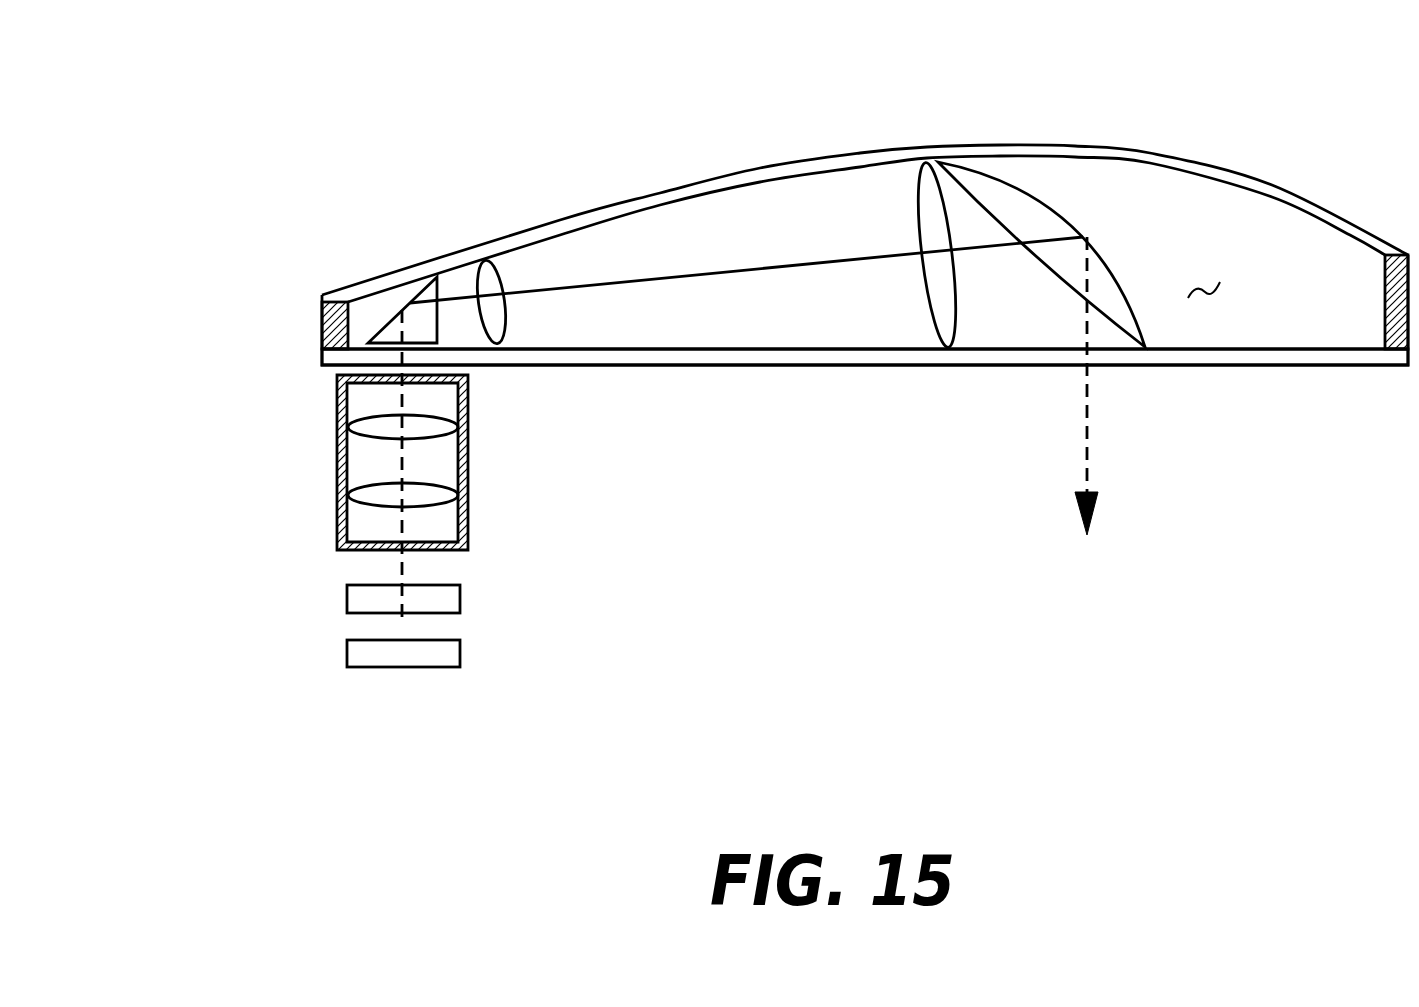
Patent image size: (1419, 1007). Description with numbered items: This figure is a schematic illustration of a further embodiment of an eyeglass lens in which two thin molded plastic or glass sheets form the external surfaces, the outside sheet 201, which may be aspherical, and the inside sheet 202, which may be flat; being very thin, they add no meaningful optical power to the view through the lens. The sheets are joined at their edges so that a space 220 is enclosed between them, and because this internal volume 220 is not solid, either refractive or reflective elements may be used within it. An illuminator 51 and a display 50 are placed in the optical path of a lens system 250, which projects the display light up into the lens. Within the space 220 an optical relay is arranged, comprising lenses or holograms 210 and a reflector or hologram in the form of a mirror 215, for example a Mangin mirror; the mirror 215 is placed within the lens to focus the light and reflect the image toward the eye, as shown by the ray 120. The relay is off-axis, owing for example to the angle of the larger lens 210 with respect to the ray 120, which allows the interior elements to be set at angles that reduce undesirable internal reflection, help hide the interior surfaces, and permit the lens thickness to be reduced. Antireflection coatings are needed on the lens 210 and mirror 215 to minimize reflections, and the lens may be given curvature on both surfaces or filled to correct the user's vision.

The outside sheet 201 is at (1272, 185).
The inside sheet 202 is at (1320, 355).
The space 220 is at (1203, 297).
The mirror 215 is at (417, 297).
The lens 210 is at (490, 280).
The ray 120 is at (1087, 443).
The lens system 250 is at (358, 455).
The display 50 is at (352, 598).
The illuminator 51 is at (352, 652).